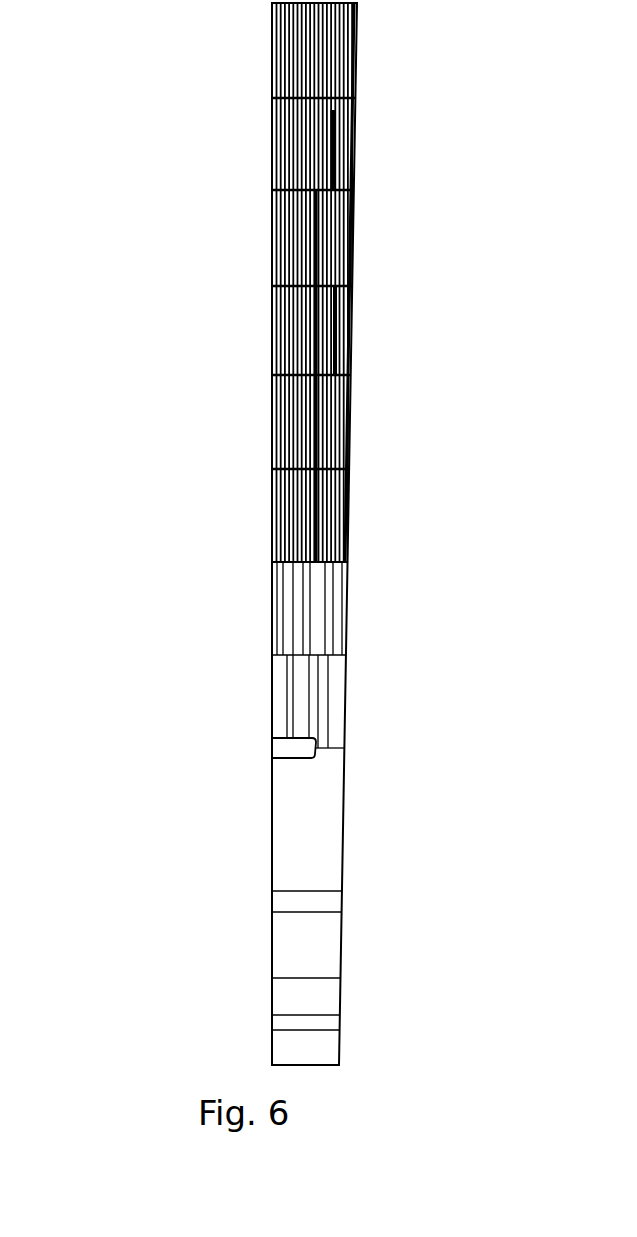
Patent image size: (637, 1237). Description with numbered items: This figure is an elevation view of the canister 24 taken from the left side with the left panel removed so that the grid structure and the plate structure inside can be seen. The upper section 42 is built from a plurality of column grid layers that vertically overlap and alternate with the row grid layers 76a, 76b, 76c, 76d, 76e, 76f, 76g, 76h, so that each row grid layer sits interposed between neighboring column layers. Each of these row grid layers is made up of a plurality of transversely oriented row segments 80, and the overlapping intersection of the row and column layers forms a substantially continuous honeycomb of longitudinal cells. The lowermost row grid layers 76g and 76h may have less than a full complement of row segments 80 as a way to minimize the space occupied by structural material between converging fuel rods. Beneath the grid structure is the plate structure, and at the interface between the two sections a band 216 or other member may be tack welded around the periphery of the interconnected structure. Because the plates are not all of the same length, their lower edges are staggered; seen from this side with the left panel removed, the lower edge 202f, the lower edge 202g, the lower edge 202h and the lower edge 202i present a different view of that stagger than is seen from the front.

The canister 24 is at (153, 383).
The upper section 42 is at (269, 360).
The row grid layer 76a is at (273, 68).
The row grid layer 76b is at (273, 107).
The row grid layer 76c is at (273, 242).
The row grid layer 76d is at (351, 322).
The row grid layer 76e is at (350, 420).
The row grid layer 76f is at (349, 499).
The row grid layer 76g is at (273, 623).
The row grid layer 76h is at (273, 687).
The row segment 80 is at (281, 158).
The band 216 is at (292, 758).
The lower edge 202i is at (327, 912).
The lower edge 202h is at (327, 978).
The lower edge 202f is at (327, 1015).
The lower edge 202g is at (327, 1030).